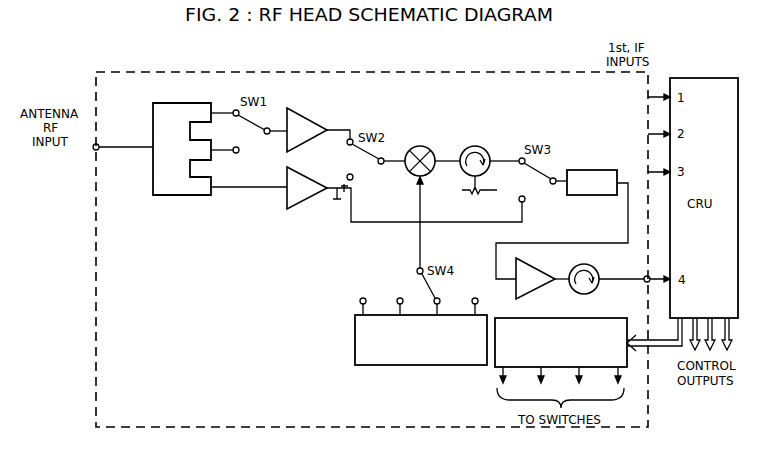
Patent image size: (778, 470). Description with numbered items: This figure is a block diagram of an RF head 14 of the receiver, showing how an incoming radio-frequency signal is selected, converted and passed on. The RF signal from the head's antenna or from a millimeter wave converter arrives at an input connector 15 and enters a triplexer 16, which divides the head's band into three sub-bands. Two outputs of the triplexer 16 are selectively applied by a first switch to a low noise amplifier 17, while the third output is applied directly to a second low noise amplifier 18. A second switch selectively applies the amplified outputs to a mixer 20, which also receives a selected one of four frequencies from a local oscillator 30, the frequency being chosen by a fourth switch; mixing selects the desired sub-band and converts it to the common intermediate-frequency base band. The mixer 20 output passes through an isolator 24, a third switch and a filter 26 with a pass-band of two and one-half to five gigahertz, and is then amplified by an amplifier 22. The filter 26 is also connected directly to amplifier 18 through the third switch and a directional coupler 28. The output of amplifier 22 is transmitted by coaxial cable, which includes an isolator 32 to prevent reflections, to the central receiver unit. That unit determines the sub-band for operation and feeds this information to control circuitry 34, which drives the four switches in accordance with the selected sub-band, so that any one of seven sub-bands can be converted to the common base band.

The RF head 14 is at (455, 73).
The input connector 15 is at (110, 145).
The triplexer 16 is at (190, 103).
The low noise amplifier 17 is at (300, 110).
The low noise amplifier 18 is at (287, 180).
The mixer 20 is at (424, 146).
The amplifier 22 is at (536, 266).
The isolator 24 is at (480, 146).
The filter 26 is at (617, 172).
The directional coupler 28 is at (352, 213).
The local oscillator 30 is at (352, 330).
The isolator 32 is at (600, 266).
The control circuitry 34 is at (620, 318).